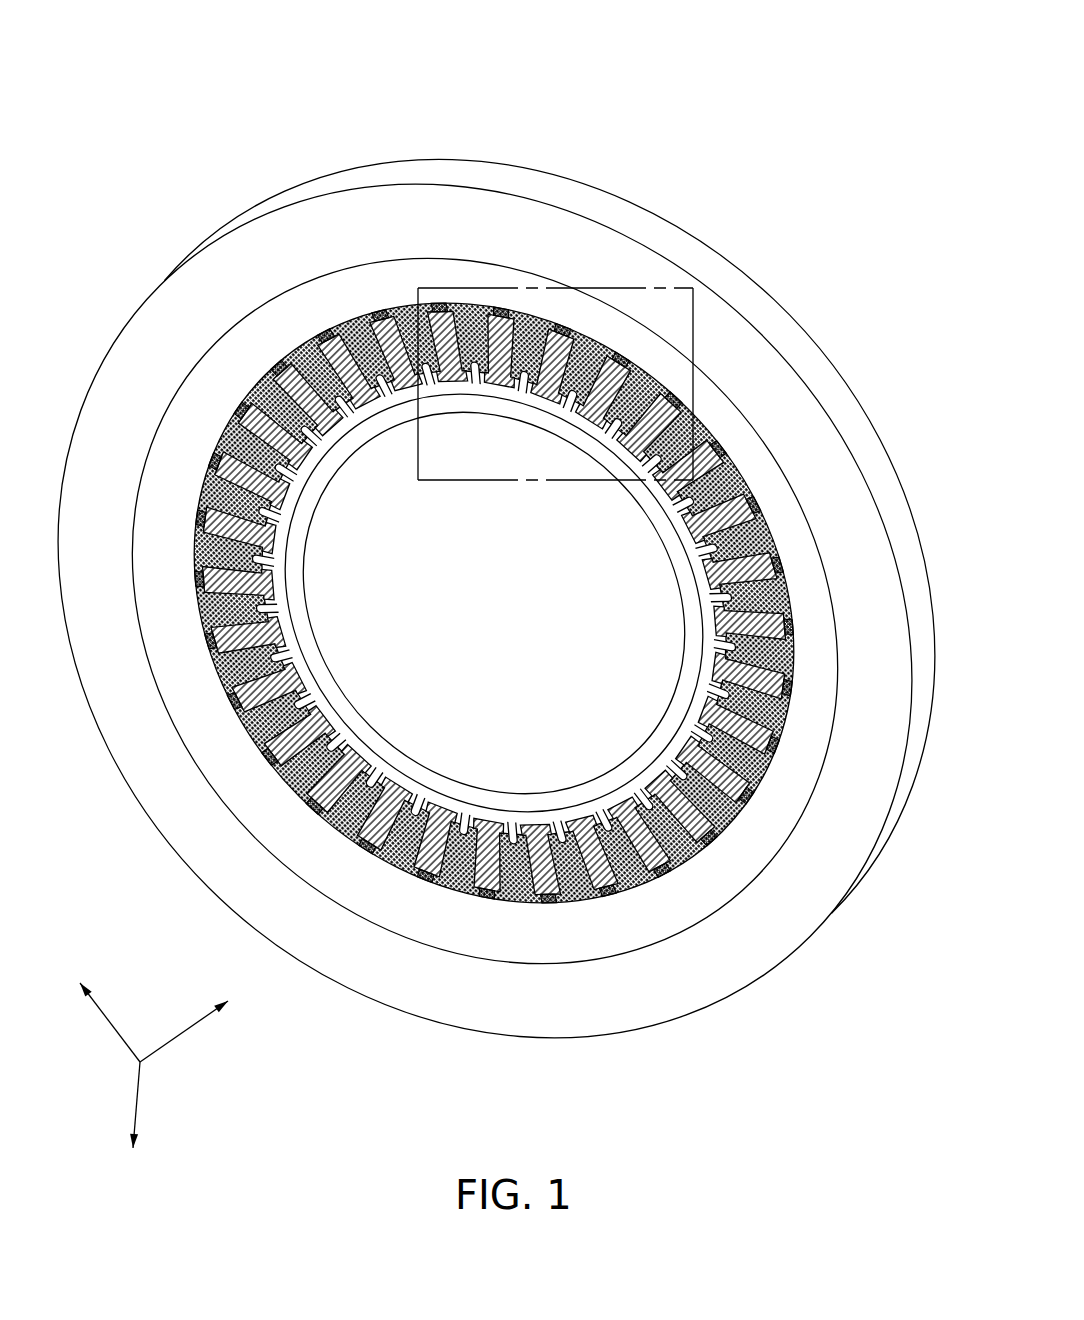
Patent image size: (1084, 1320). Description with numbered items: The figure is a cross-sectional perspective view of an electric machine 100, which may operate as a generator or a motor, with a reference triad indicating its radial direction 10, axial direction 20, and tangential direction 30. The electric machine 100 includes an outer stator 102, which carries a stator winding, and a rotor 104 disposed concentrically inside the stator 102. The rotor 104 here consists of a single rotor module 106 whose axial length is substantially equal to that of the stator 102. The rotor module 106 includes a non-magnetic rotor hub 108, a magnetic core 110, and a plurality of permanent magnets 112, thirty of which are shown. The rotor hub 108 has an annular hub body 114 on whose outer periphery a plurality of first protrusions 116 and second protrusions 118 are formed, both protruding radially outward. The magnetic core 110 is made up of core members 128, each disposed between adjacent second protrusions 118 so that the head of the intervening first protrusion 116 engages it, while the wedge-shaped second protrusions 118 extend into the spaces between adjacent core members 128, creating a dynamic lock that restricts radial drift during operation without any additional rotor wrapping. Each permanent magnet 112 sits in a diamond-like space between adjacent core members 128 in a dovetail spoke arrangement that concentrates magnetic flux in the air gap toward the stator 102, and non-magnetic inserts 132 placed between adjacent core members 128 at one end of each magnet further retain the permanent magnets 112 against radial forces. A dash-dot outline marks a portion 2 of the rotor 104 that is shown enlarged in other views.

The electric machine 100 is at (790, 74).
The stator 102 is at (800, 325).
The rotor 104 is at (493, 602).
The rotor module 106 is at (494, 603).
The rotor hub 108 is at (436, 754).
The magnetic core 110 is at (493, 602).
The permanent magnets 112 is at (493, 602).
The hub body 114 is at (494, 603).
The first protrusions 116 is at (494, 603).
The second protrusions 118 is at (494, 603).
The core members 128 is at (494, 603).
The non-magnetic inserts 132 is at (493, 602).
The portion 2 is at (657, 290).
The radial direction 10 is at (137, 1108).
The axial direction 20 is at (198, 1030).
The tangential direction 30 is at (103, 1004).